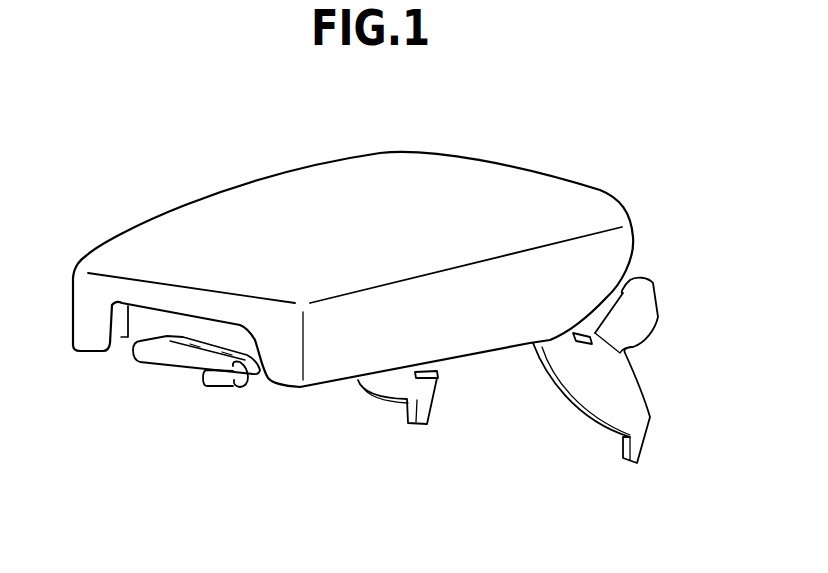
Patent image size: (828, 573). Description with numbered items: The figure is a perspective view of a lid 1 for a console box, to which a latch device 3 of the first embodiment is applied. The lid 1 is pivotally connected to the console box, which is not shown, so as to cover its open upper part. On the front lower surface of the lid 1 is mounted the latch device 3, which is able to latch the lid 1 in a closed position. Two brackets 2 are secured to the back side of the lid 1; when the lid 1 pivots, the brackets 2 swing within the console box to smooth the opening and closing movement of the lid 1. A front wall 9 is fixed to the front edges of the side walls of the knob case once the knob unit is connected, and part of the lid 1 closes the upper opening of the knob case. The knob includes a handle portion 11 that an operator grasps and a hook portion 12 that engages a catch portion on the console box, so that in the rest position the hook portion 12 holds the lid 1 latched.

The lid 1 is at (455, 187).
The bracket 2 is at (423, 390).
The latch device 3 is at (259, 385).
The front wall 9 is at (140, 330).
The handle portion 11 is at (177, 355).
The hook portion 12 is at (215, 378).